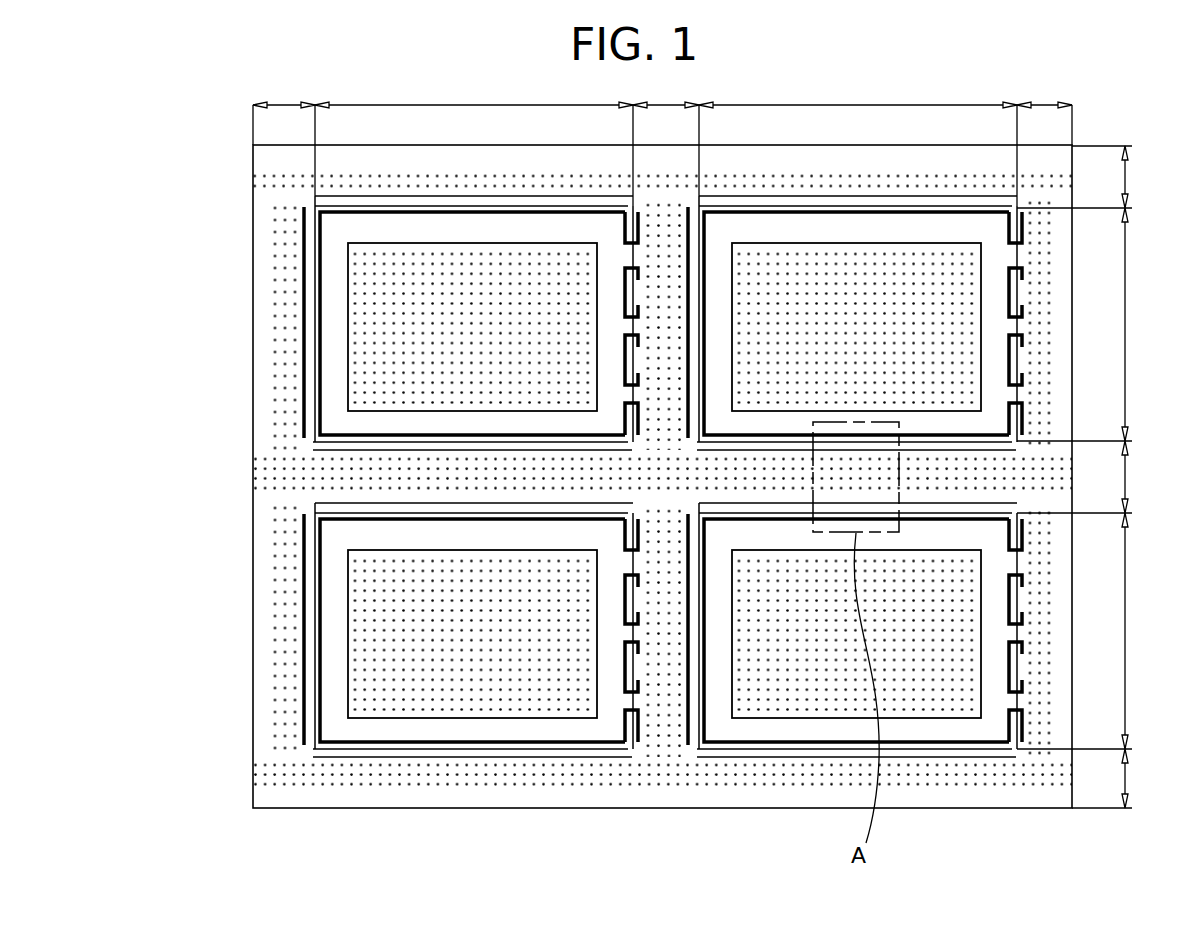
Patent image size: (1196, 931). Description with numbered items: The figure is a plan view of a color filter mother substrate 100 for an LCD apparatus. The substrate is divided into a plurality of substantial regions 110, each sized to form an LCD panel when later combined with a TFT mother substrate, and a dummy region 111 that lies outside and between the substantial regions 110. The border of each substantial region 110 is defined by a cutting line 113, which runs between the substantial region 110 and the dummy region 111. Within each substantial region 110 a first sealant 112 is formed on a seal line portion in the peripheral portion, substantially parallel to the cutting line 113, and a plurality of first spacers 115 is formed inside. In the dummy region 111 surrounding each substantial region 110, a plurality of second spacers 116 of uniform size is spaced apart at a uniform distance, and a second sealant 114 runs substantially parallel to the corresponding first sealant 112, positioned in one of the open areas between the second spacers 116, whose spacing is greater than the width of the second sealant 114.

The color filter mother substrate 100 is at (674, 848).
The substantial region 110 is at (748, 411).
The dummy region 111 is at (717, 440).
The first sealant 112 is at (316, 379).
The cutting line 113 is at (313, 401).
The second sealant 114 is at (297, 428).
The first spacer 115 is at (372, 277).
The second spacer 116 is at (288, 223).